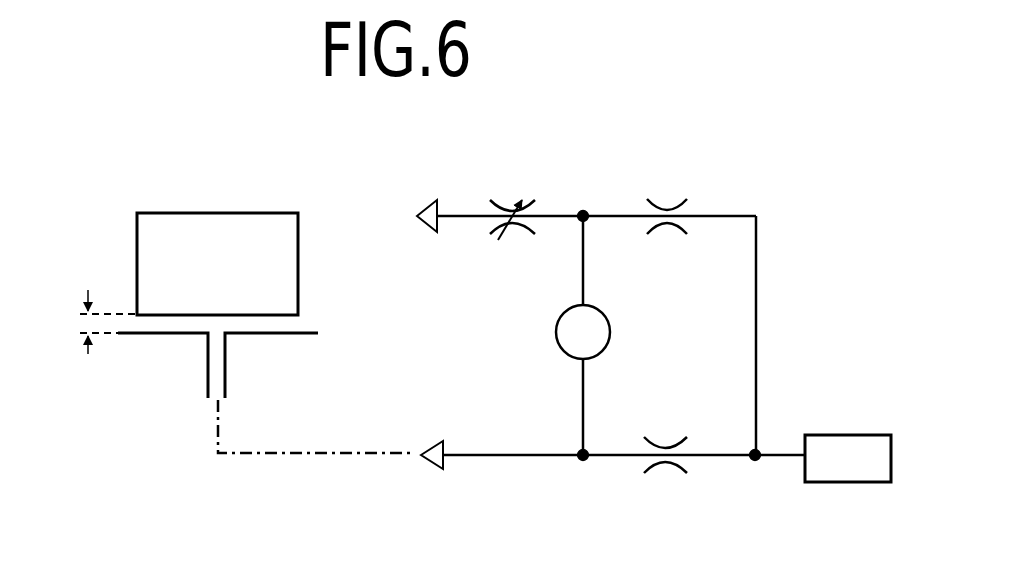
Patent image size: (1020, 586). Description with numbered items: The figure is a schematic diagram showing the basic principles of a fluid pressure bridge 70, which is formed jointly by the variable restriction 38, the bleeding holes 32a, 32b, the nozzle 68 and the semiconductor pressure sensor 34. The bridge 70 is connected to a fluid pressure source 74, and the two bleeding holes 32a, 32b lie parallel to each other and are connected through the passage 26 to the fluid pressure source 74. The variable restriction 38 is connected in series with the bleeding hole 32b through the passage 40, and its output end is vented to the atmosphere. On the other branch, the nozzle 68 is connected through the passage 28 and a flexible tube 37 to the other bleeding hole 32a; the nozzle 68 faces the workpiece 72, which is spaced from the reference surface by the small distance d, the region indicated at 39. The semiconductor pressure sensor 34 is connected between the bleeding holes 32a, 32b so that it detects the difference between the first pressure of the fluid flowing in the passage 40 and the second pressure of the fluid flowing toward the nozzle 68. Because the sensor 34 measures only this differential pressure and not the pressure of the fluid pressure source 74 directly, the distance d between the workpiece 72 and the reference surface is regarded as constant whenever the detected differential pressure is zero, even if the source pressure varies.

The passage 26 is at (760, 327).
The passage 28 is at (542, 458).
The bleeding hole 32a is at (672, 475).
The bleeding hole 32b is at (667, 200).
The semiconductor pressure sensor 34 is at (612, 328).
The flexible tube 37 is at (285, 456).
The variable restriction 38 is at (507, 198).
The gap between nozzle and workpiece 39 is at (158, 392).
The passage 40 is at (545, 215).
The nozzle 68 is at (228, 378).
The fluid pressure bridge 70 is at (741, 116).
The workpiece 72 is at (300, 275).
The fluid pressure source 74 is at (830, 483).